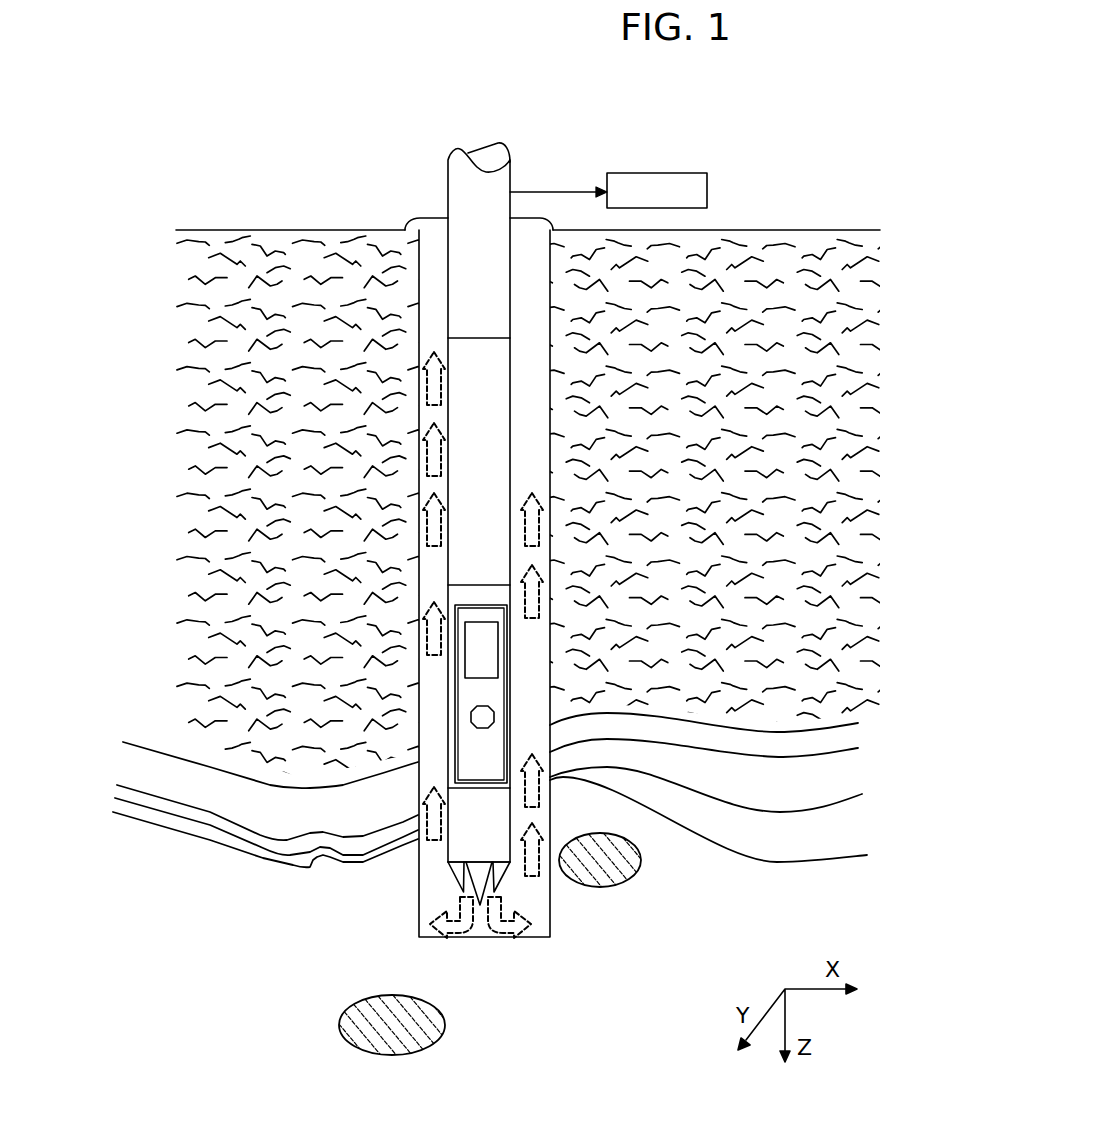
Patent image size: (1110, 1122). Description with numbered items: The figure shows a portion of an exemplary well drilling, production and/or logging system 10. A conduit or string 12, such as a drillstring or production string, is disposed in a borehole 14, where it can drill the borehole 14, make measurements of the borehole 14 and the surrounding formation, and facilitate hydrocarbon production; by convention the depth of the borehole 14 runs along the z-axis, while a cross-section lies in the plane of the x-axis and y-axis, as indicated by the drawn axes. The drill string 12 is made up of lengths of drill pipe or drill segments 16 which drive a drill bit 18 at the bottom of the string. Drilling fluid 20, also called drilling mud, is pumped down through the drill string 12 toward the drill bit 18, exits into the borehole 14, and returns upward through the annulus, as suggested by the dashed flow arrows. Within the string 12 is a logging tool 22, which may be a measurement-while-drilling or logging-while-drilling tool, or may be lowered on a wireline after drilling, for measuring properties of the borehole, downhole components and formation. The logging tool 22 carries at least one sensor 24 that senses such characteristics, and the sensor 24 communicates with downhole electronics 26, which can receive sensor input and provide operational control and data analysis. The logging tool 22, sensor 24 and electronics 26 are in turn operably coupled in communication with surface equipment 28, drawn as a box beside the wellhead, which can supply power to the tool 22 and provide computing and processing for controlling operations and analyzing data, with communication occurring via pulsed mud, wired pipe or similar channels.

The well drilling, production and/or logging system 10 is at (450, 118).
The string 12 is at (448, 183).
The borehole 14 is at (437, 238).
The drill segments 16 is at (487, 282).
The drill bit 18 is at (478, 885).
The drilling fluid 20 is at (528, 929).
The logging tool 22 is at (468, 770).
The sensor 24 is at (483, 717).
The downhole electronics 26 is at (495, 652).
The surface equipment 28 is at (695, 173).